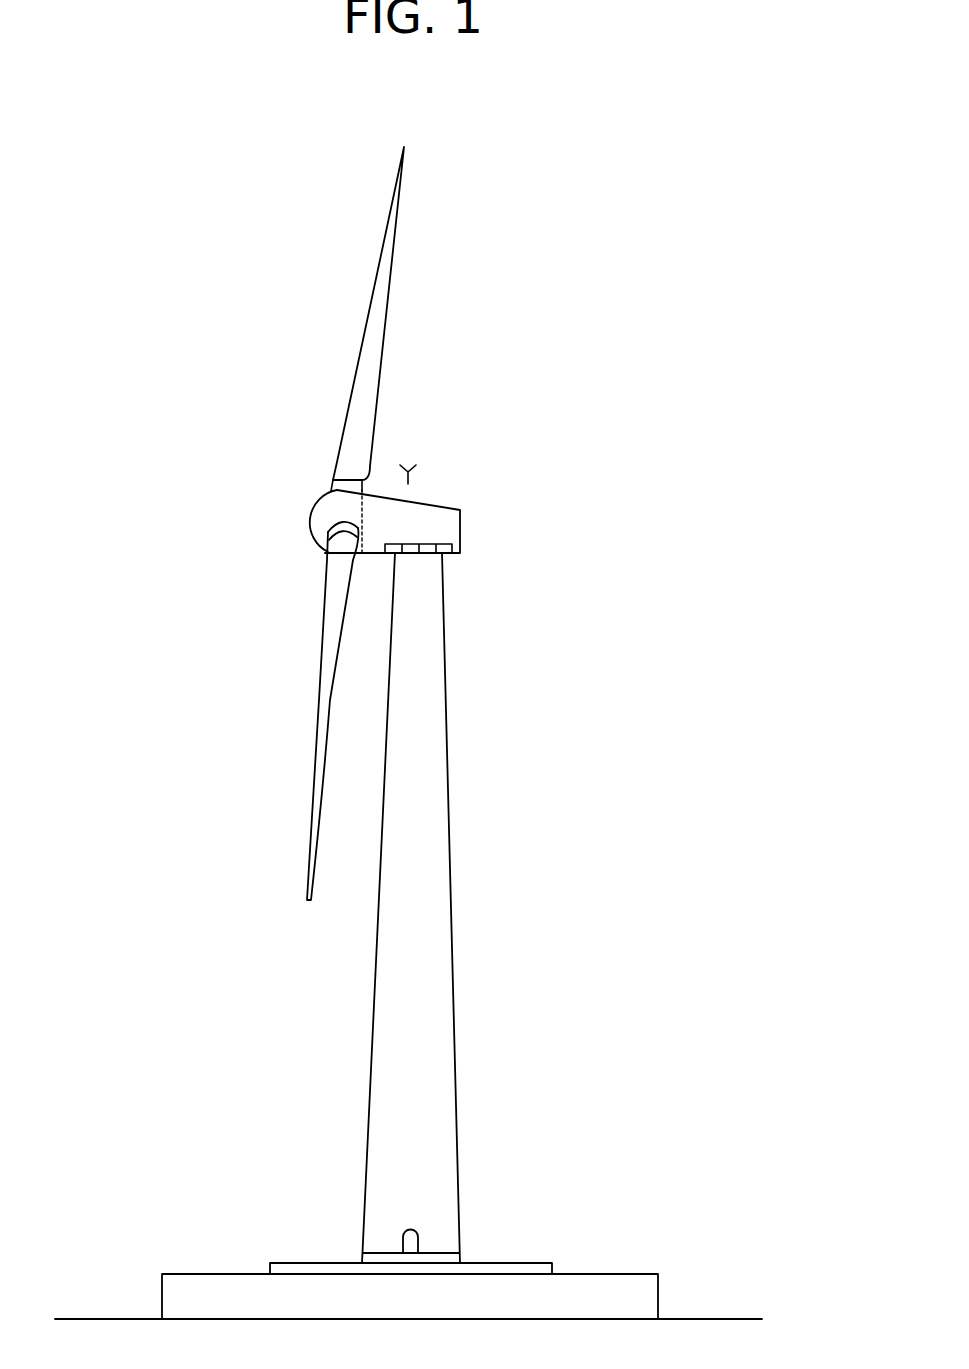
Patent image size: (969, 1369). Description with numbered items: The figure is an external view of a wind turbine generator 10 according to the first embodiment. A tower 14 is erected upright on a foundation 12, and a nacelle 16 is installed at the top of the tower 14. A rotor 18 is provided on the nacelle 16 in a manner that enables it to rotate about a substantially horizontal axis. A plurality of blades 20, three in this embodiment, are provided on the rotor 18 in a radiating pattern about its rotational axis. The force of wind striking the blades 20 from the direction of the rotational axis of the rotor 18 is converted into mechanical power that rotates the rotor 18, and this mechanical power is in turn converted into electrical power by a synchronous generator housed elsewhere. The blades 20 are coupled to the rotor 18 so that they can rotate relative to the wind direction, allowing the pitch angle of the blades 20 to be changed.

The wind turbine generator 10 is at (590, 437).
The foundation 12 is at (620, 1274).
The tower 14 is at (446, 745).
The nacelle 16 is at (436, 506).
The rotor 18 is at (305, 518).
The blades 20 is at (390, 258).